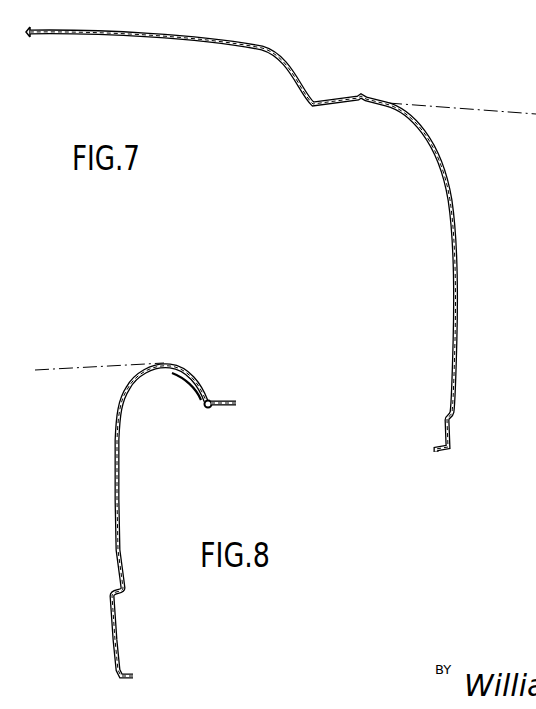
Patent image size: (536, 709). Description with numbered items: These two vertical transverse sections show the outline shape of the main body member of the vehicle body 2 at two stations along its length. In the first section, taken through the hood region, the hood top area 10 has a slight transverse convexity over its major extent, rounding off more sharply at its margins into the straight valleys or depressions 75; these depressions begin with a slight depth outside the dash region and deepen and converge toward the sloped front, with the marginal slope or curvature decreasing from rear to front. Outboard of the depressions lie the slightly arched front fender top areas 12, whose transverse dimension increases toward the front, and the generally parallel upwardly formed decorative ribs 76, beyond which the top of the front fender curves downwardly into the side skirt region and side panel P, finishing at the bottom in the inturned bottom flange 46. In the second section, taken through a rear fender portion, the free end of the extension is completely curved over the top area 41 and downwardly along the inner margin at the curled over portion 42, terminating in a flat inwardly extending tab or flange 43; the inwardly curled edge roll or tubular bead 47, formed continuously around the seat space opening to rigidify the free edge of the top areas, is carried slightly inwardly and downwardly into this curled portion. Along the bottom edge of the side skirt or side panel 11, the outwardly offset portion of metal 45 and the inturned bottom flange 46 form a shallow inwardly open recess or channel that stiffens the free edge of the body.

In FIG. 7, the hood top area 10 is at (190, 35).
In FIG. 7, the valley or depression 75 is at (313, 102).
In FIG. 7, the decorative rib 76 is at (361, 97).
In FIG. 7, the front fender top area 12 is at (386, 103).
In FIG. 7, the side panel portion P is at (458, 279).
In FIG. 7, the inturned bottom flange 46 is at (440, 455).
In FIG. 8, the inturned bottom flange 46 is at (128, 672).
In FIG. 7, the body 2 is at (529, 416).
In FIG. 8, the side panel 11 is at (117, 553).
In FIG. 8, the top area 41 is at (143, 374).
In FIG. 8, the curled over portion 42 is at (200, 380).
In FIG. 8, the curled edge roll or tubular bead 47 is at (196, 396).
In FIG. 8, the inwardly extending tab or flange 43 is at (231, 401).
In FIG. 8, the outwardly offset portion of metal 45 is at (112, 626).